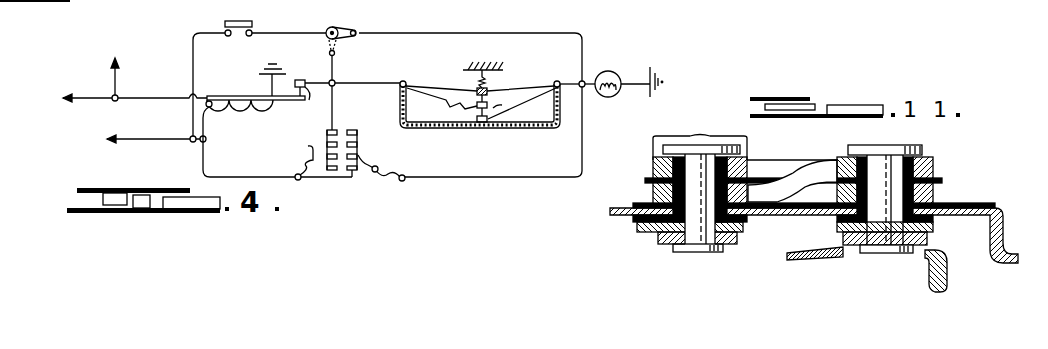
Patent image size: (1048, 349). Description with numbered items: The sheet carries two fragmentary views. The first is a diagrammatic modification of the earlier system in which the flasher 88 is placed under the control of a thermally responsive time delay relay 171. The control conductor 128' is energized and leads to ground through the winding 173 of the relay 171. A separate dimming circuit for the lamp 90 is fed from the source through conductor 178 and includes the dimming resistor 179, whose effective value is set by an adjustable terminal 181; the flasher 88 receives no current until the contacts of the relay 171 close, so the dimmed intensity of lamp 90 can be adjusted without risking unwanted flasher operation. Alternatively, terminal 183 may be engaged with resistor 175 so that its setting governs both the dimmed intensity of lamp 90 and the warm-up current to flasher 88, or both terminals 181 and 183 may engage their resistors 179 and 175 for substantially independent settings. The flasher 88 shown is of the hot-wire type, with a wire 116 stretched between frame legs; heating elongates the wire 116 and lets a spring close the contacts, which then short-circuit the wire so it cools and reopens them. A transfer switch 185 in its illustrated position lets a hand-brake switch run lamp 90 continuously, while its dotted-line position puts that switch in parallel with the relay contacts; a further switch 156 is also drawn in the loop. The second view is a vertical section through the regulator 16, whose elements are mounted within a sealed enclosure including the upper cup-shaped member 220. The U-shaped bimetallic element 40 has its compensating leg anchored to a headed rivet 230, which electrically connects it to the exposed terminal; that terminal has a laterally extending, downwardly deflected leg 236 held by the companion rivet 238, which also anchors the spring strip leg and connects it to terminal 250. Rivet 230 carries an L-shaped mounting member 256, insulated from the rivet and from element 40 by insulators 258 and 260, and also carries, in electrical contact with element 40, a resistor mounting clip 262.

In FIG. 4, the switch 156 is at (245, 21).
In FIG. 4, the transfer switch 185 is at (355, 29).
In FIG. 4, the control conductor 128' is at (153, 78).
In FIG. 4, the thermally responsive time delay relay 171 is at (253, 70).
In FIG. 4, the winding 173 is at (247, 107).
In FIG. 4, the conductor 178 is at (152, 140).
In FIG. 4, the terminal 183 is at (308, 157).
In FIG. 4, the resistor 175 is at (333, 130).
In FIG. 4, the dimming resistor 179 is at (358, 140).
In FIG. 4, the adjustable terminal 181 is at (367, 172).
In FIG. 4, the flasher 88 is at (462, 133).
In FIG. 4, the wire 116 is at (519, 86).
In FIG. 4, the lamp 90 is at (614, 70).
In FIG. 11, the rivet 238 is at (680, 149).
In FIG. 11, the terminal 250 is at (748, 162).
In FIG. 11, the laterally extending downwardly deflected leg 236 is at (650, 184).
In FIG. 11, the headed rivet 230 is at (931, 146).
In FIG. 11, the regulator 16 is at (948, 165).
In FIG. 11, the insulator 258 is at (935, 196).
In FIG. 11, the upper cup-shaped member 220 is at (1004, 220).
In FIG. 11, the L-shaped mounting member 256 is at (935, 230).
In FIG. 11, the insulator 260 is at (942, 254).
In FIG. 11, the resistor mounting clip 262 is at (946, 282).
In FIG. 11, the bimetallic element 40 is at (820, 256).